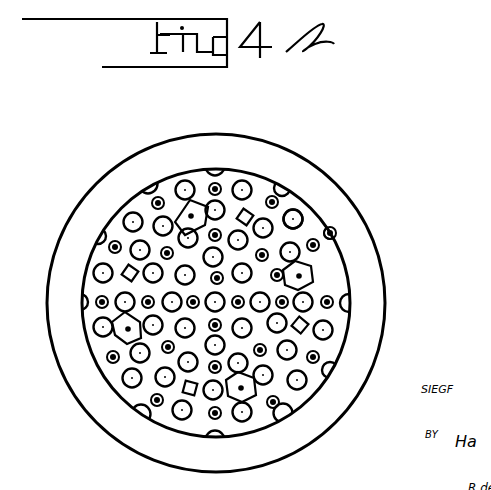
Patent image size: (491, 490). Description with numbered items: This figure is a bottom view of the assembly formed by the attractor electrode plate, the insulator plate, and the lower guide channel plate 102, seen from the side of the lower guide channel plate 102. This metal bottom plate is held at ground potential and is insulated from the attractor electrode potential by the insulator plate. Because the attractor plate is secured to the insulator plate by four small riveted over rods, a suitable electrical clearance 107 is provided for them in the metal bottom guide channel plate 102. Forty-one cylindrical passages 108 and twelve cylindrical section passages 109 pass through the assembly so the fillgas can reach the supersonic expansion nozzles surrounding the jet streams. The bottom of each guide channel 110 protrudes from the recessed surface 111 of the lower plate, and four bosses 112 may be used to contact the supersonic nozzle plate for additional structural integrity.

The lower guide channel plate 102 is at (372, 237).
The electrical clearance 107 is at (262, 393).
The cylindrical passages 108 is at (303, 209).
The cylindrical section passages 109 is at (333, 236).
The bottom of guide channel 110 is at (320, 356).
The recessed surface 111 is at (311, 382).
The bosses 112 is at (251, 212).